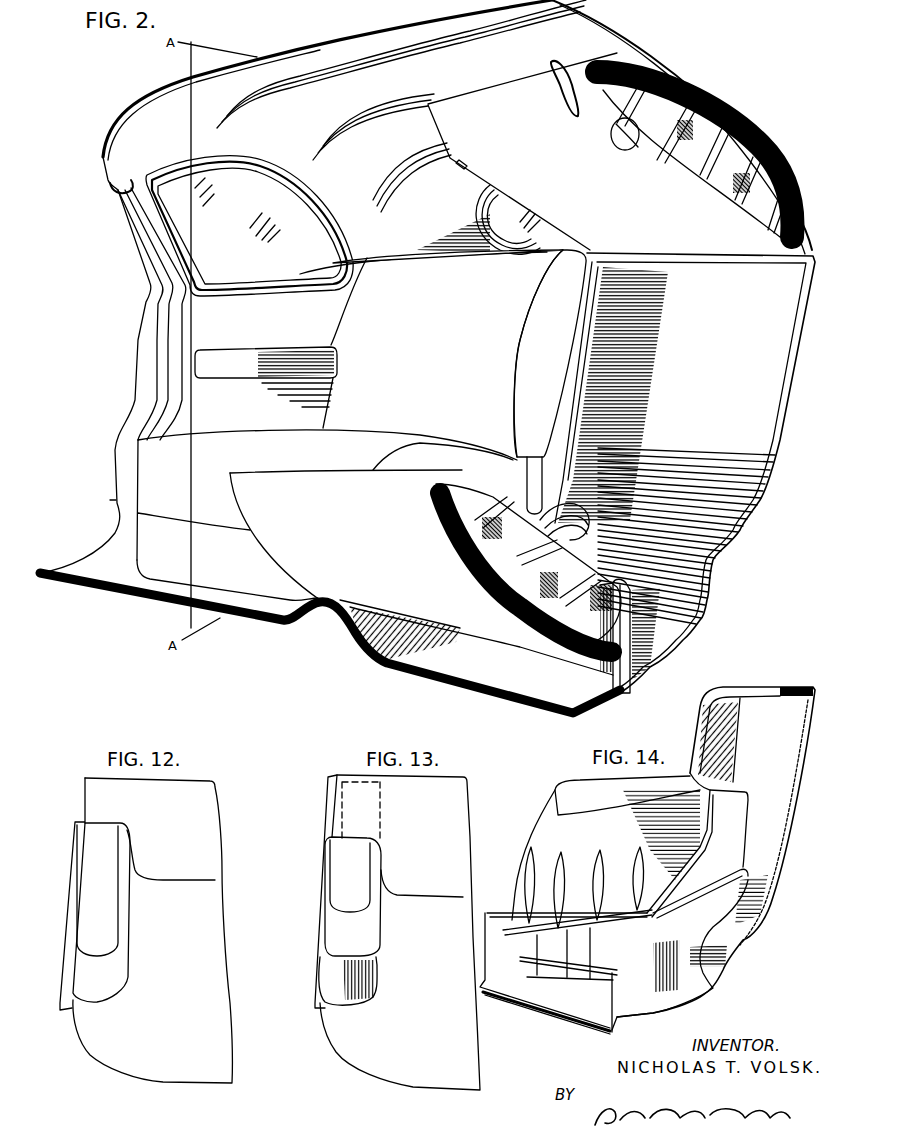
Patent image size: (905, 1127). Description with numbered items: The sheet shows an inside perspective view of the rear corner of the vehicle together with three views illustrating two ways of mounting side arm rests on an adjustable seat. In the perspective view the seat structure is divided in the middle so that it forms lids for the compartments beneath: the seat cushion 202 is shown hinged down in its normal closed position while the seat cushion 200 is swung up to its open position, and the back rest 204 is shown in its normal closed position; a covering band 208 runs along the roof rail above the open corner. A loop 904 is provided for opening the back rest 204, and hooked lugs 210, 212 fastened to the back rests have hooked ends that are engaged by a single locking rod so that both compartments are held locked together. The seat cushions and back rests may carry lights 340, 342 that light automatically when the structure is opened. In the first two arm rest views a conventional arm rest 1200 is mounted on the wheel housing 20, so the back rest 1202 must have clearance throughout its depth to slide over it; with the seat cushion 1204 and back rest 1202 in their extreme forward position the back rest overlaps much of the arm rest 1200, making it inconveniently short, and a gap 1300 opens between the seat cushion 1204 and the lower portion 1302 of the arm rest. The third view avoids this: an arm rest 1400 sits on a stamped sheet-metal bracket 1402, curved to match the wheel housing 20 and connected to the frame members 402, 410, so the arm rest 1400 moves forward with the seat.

In FIG. 2, the seat cushion 200 is at (460, 597).
In FIG. 2, the seat cushion 202 is at (187, 473).
In FIG. 2, the back rest 204 is at (337, 330).
In FIG. 2, the roof rail covering band 208 is at (720, 108).
In FIG. 2, the lug 210 is at (461, 168).
In FIG. 2, the lug 212 is at (557, 420).
In FIG. 2, the light 340 is at (633, 150).
In FIG. 2, the light 342 is at (500, 498).
In FIG. 2, the loop 904 is at (551, 96).
In FIG. 12, the wheel housing 20 is at (76, 853).
In FIG. 13, the wheel housing 20 is at (316, 855).
In FIG. 12, the arm rest 1200 is at (113, 917).
In FIG. 13, the arm rest 1200 is at (337, 877).
In FIG. 12, the back rest 1202 is at (92, 788).
In FIG. 13, the back rest 1202 is at (338, 810).
In FIG. 12, the seat cushion 1204 is at (108, 1057).
In FIG. 13, the seat cushion 1204 is at (343, 1047).
In FIG. 13, the gap 1300 is at (337, 985).
In FIG. 13, the lower portion of the arm rest 1302 is at (338, 935).
In FIG. 14, the frame member 402 is at (708, 838).
In FIG. 14, the frame member 410 is at (648, 917).
In FIG. 14, the arm rest 1400 is at (555, 800).
In FIG. 14, the bracket 1402 is at (546, 851).